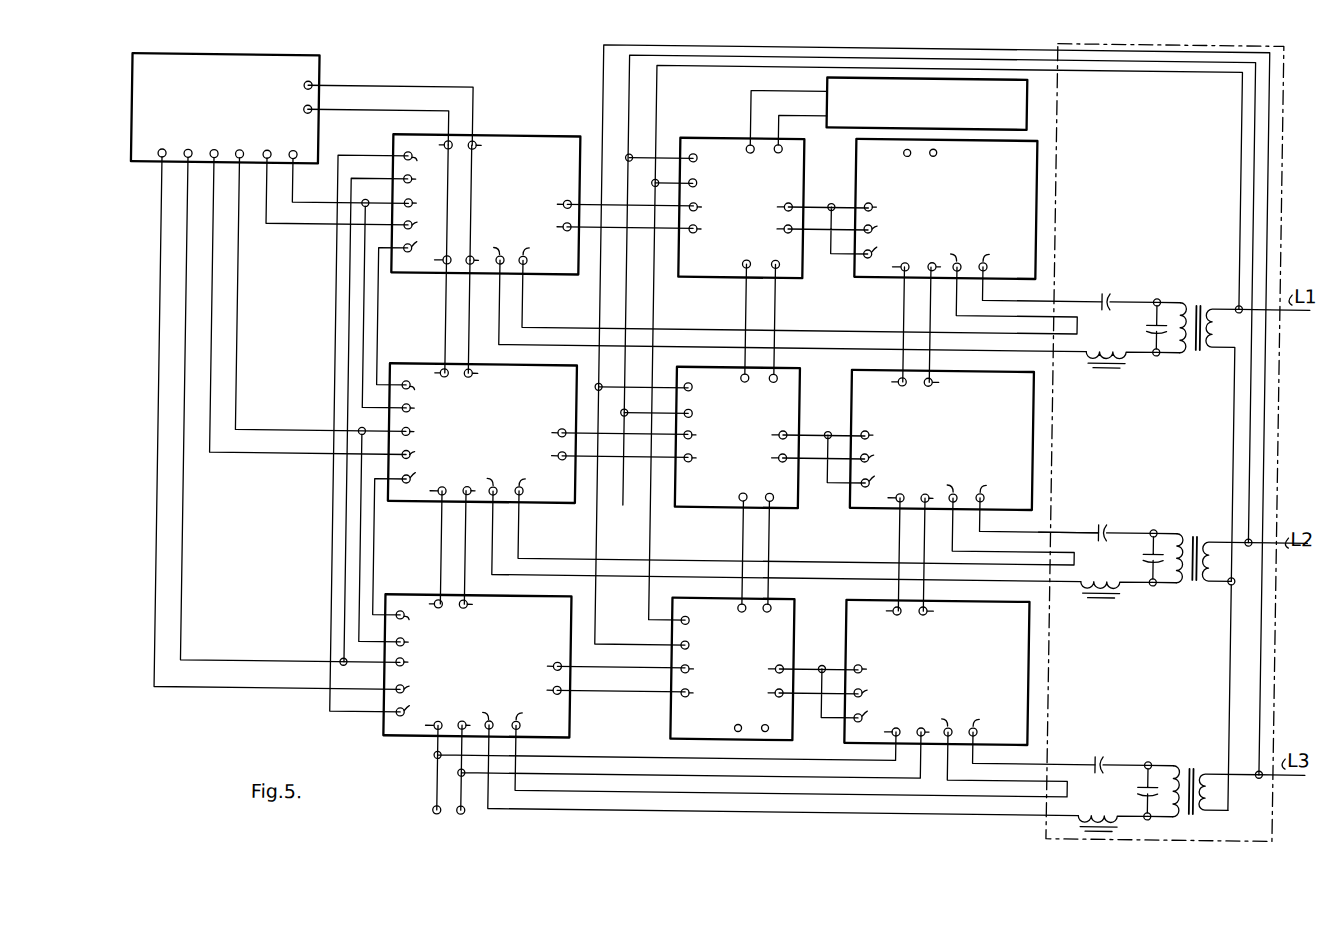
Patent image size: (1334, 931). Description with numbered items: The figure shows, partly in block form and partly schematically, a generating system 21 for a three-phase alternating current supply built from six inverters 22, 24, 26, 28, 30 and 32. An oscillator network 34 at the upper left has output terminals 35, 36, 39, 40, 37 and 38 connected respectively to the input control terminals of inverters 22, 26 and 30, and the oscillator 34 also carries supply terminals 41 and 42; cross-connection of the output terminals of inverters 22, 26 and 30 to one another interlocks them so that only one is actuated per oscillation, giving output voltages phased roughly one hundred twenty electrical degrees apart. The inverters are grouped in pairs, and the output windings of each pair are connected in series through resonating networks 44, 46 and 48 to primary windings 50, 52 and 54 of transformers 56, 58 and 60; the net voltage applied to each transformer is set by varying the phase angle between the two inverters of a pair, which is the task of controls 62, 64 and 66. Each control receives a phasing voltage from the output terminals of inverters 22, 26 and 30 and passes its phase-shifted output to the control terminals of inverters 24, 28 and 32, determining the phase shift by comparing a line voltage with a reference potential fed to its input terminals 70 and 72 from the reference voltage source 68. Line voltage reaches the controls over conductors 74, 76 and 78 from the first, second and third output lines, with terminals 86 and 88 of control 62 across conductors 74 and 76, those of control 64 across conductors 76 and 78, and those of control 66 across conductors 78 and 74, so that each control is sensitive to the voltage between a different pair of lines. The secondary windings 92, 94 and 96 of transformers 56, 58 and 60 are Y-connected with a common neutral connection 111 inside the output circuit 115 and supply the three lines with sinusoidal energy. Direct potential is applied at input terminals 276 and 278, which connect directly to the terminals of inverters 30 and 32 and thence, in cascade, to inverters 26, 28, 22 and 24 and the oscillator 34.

The generating system 21 is at (497, 79).
The inverter 22 is at (540, 277).
The inverter 24 is at (880, 277).
The inverter 26 is at (556, 505).
The inverter 28 is at (878, 508).
The inverter 30 is at (388, 727).
The inverter 32 is at (849, 623).
The oscillator network 34 is at (314, 60).
The oscillator output terminal 35 is at (263, 156).
The oscillator output terminal 36 is at (289, 156).
The oscillator output terminal 37 is at (157, 156).
The oscillator output terminal 38 is at (183, 156).
The oscillator output terminal 39 is at (210, 156).
The oscillator output terminal 40 is at (235, 156).
The oscillator negative supply terminal 41 is at (302, 87).
The oscillator positive supply terminal 42 is at (302, 111).
The resonating network 44 is at (1144, 322).
The resonating network 46 is at (1144, 558).
The resonating network 48 is at (1142, 791).
The primary winding 50 is at (1186, 297).
The primary winding 52 is at (1177, 527).
The primary winding 54 is at (1175, 758).
The transformer 56 is at (1166, 428).
The transformer 58 is at (1164, 558).
The transformer 60 is at (1172, 788).
The control 62 is at (716, 279).
The control 64 is at (716, 509).
The control 66 is at (675, 729).
The reference voltage source 68 is at (822, 76).
The input terminal 70 is at (772, 152).
The input terminal 72 is at (750, 152).
The conductor 74 is at (652, 94).
The conductor 76 is at (624, 83).
The conductor 78 is at (598, 82).
The control terminal 86 is at (693, 183).
The control terminal 88 is at (689, 154).
The secondary winding 92 is at (1212, 321).
The secondary winding 94 is at (1196, 594).
The secondary winding 96 is at (1214, 806).
The neutral connection 111 is at (1233, 482).
The output circuit 115 is at (1049, 526).
The input terminal 276 is at (438, 814).
The input terminal 278 is at (471, 815).